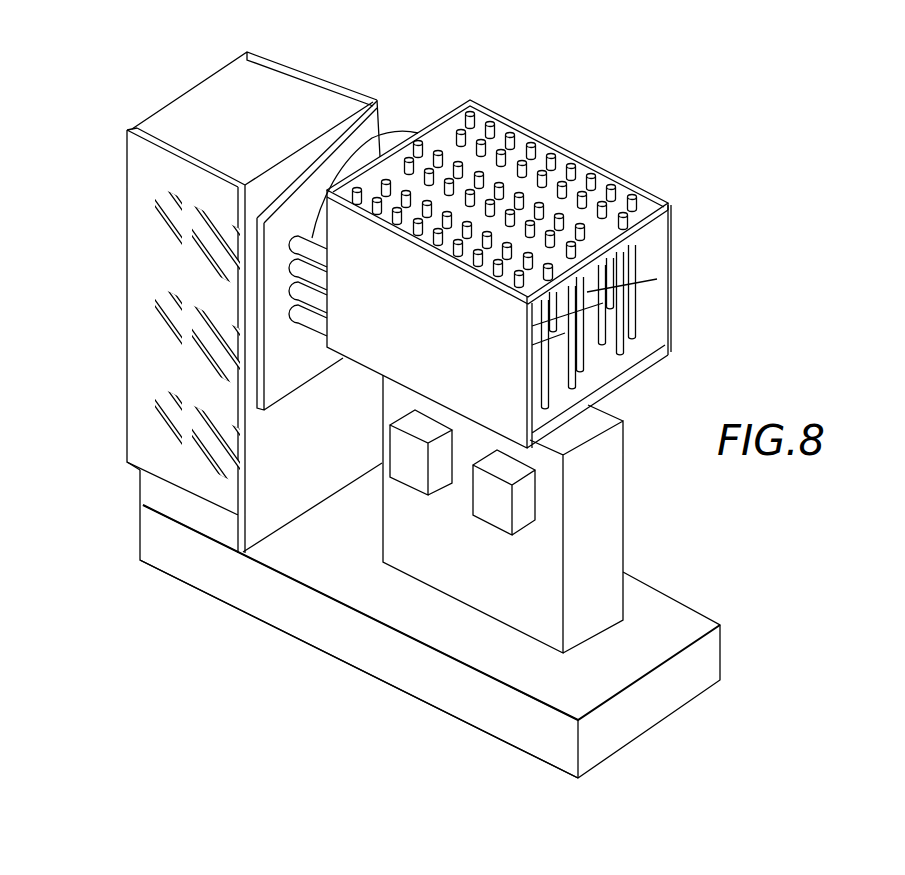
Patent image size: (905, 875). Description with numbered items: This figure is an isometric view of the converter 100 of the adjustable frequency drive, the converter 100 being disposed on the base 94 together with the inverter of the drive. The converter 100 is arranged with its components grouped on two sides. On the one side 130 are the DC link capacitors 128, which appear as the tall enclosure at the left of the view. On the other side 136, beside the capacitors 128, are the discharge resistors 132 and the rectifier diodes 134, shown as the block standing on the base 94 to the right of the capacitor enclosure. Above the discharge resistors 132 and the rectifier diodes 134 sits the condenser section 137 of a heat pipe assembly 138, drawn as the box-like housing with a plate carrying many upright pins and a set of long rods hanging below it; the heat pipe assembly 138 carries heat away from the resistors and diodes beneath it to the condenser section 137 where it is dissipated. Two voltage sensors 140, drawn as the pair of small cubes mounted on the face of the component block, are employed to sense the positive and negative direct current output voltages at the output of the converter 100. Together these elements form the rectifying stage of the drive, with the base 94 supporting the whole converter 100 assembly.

The converter 100 is at (736, 749).
The base 94 is at (358, 650).
The DC link capacitors 128 is at (126, 274).
The one side 130 is at (168, 592).
The discharge resistors 132 is at (325, 547).
The rectifier diodes 134 is at (635, 510).
The other side 136 is at (420, 712).
The condenser section 137 is at (672, 233).
The heat pipe assembly 138 is at (542, 274).
The voltage sensors 140 is at (487, 522).